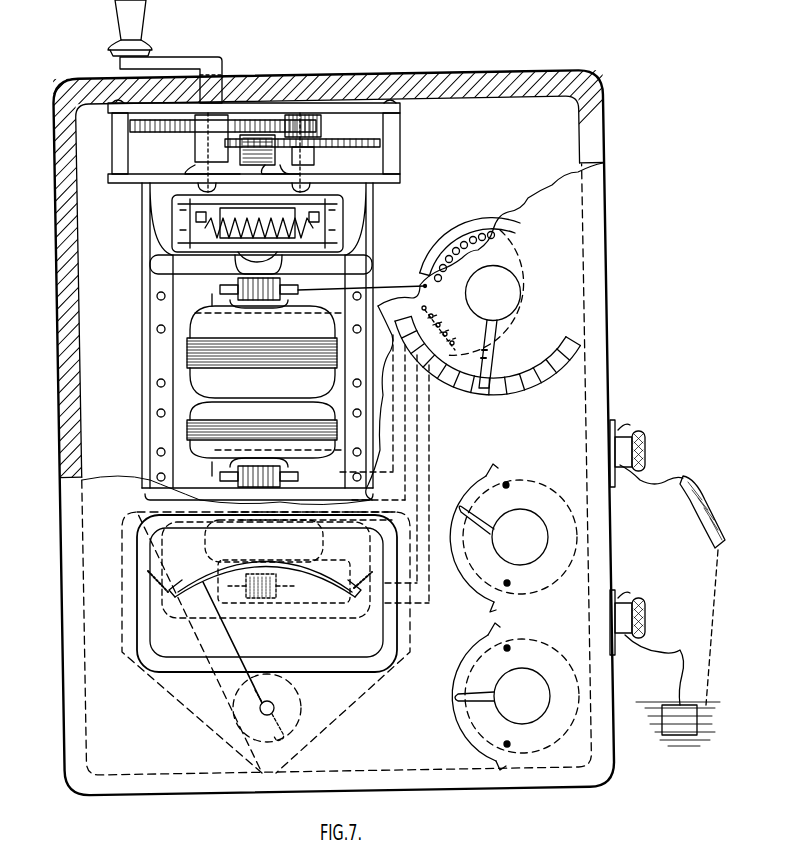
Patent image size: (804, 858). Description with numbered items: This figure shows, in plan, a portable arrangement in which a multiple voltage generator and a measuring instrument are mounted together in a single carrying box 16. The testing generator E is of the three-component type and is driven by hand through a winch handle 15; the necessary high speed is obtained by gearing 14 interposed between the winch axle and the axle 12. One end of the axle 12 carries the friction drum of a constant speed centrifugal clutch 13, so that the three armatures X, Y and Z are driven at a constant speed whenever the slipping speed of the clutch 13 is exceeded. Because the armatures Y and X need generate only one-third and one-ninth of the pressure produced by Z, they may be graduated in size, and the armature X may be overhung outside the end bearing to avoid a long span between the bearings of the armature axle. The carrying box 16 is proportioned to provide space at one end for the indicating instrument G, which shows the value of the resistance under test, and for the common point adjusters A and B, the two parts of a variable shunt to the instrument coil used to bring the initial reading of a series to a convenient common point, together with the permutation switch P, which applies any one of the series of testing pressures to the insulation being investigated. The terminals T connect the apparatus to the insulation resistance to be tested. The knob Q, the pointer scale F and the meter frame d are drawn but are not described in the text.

The axle 12 is at (240, 158).
The constant speed centrifugal clutch 13 is at (172, 225).
The gearing 14 is at (335, 143).
The winch handle 15 is at (137, 33).
The carrying box 16 is at (470, 74).
The testing generator E is at (32, 358).
The armature Z is at (188, 350).
The armature Y is at (188, 432).
The armature X is at (290, 546).
The permutation switch P is at (462, 240).
The knob Q is at (516, 298).
The common point adjuster B is at (513, 538).
The common point adjuster A is at (515, 696).
The terminal T is at (667, 583).
The pointer scale F is at (260, 632).
The meter frame d is at (266, 642).
The indicating instrument G is at (258, 725).